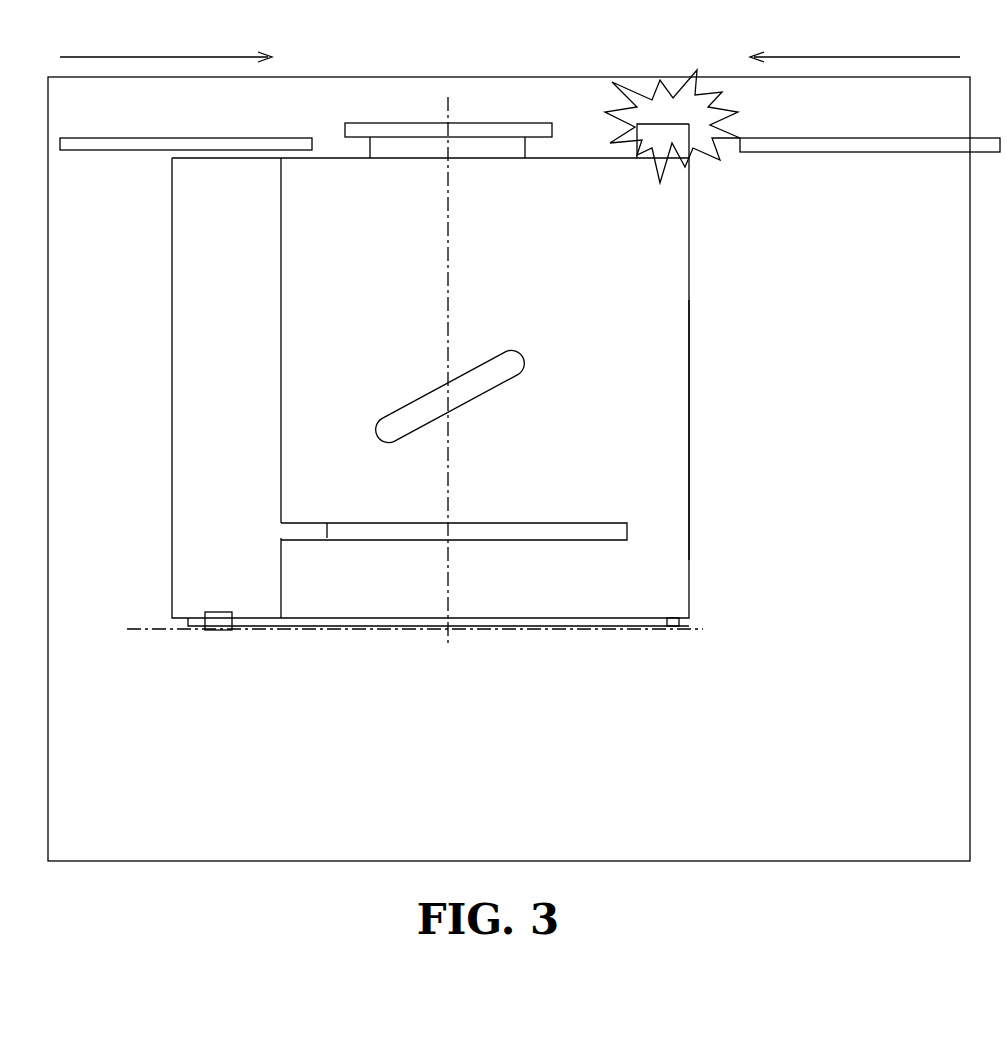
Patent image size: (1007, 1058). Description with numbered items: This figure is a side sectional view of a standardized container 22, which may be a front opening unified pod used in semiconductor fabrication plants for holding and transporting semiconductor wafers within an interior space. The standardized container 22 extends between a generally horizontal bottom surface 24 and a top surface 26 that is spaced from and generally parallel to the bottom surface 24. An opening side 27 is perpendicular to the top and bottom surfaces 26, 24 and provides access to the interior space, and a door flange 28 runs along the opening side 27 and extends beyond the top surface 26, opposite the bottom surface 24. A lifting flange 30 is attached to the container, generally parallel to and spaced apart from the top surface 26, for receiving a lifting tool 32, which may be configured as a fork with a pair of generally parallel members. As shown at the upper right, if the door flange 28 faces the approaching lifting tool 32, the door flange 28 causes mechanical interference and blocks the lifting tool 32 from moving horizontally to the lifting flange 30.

The standardized container 22 is at (710, 300).
The bottom surface 24 is at (393, 627).
The top surface 26 is at (568, 158).
The opening side 27 is at (690, 393).
The door flange 28 is at (663, 130).
The lifting flange 30 is at (475, 128).
The lifting tool 32 is at (279, 140).